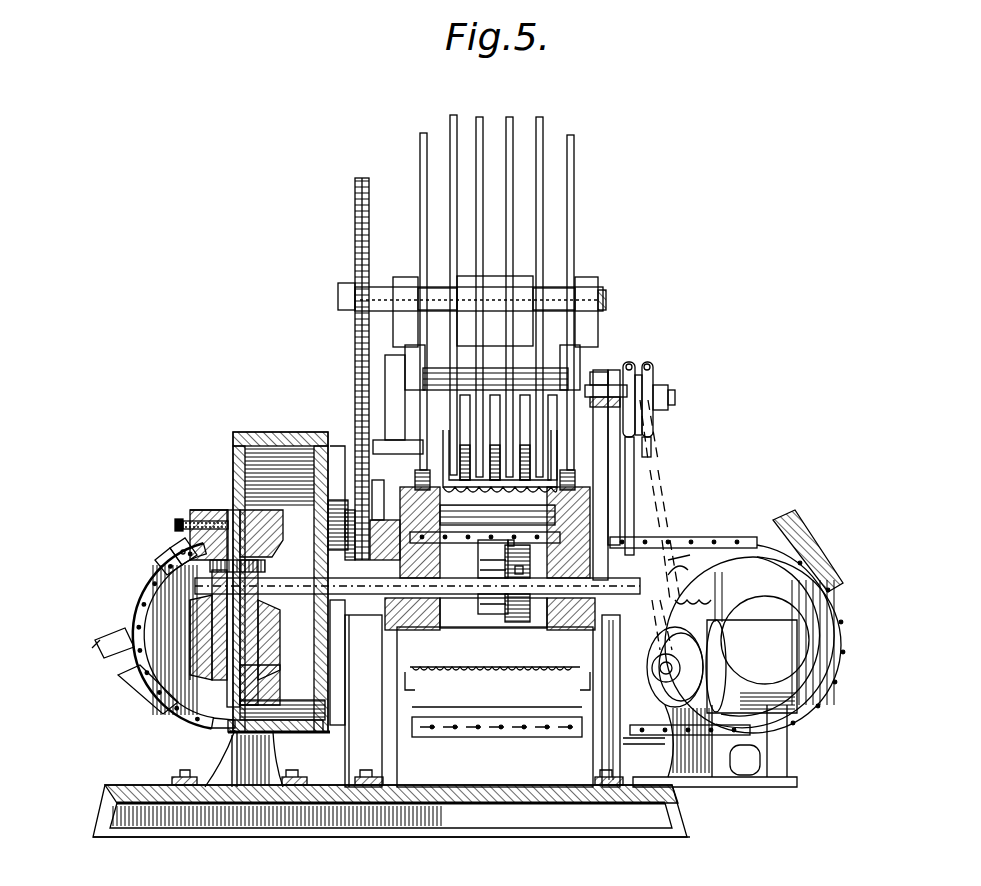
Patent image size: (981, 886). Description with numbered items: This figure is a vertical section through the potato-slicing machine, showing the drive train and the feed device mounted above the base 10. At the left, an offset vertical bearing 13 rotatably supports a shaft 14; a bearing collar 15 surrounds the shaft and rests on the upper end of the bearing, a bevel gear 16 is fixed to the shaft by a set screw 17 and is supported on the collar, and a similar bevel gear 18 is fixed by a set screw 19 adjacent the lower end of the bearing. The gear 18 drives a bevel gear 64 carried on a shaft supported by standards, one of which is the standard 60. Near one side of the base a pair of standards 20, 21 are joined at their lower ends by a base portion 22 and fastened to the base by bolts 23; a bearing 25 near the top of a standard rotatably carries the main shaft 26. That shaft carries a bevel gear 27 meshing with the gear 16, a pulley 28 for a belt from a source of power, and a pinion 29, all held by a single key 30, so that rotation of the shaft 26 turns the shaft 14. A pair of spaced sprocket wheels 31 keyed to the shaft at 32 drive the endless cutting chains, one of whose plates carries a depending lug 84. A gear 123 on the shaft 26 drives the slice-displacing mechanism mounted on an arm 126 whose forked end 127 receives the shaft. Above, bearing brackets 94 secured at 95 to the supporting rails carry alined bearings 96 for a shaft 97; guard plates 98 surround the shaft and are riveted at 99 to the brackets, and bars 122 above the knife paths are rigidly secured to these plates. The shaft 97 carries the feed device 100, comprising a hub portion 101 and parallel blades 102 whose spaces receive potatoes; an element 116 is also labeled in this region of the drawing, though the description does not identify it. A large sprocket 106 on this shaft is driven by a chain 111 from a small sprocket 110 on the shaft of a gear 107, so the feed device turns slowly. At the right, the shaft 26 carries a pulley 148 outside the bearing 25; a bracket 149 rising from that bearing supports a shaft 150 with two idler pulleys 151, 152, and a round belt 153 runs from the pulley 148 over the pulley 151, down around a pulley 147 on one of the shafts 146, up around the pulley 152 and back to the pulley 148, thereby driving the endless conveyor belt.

The base 10 is at (483, 805).
The bearing 13 is at (215, 583).
The shaft 14 is at (228, 510).
The bearing collar 15 is at (168, 552).
The bevel gear 16 is at (200, 510).
The set screw 17 is at (175, 524).
The bevel gear 18 is at (200, 726).
The set screw 19 is at (165, 702).
The standard 20 is at (360, 742).
The standard 21 is at (605, 752).
The base portion 22 is at (460, 787).
The bolts 23 is at (355, 773).
The bearing 25 is at (598, 648).
The shaft 26 is at (520, 600).
The bevel gear 27 is at (268, 615).
The pulley 28 is at (252, 432).
The pinion 29 is at (345, 615).
The key 30 is at (320, 580).
The sprocket wheels 31 is at (410, 688).
The key 32 is at (440, 600).
The standard 60 is at (210, 770).
The bevel gear 64 is at (150, 650).
The depending lug 84 is at (378, 520).
The bearing brackets 94 is at (437, 280).
The securing means 95 is at (380, 440).
The bearings 96 is at (395, 287).
The shaft 97 is at (391, 230).
The guard plate 98 is at (420, 194).
The rivets 99 is at (598, 368).
The feed device 100 is at (568, 120).
The hub portion 101 is at (494, 285).
The blades 102 is at (510, 117).
The sprocket 106 is at (355, 244).
The gear 107 is at (338, 445).
The sprocket 110 is at (348, 500).
The chain 111 is at (355, 352).
The plunger 116 is at (487, 395).
The bar 122 is at (526, 551).
The gear 123 is at (532, 573).
The arm 126 is at (518, 602).
The forked end 127 is at (478, 590).
The shafts 146 is at (640, 690).
The pulley 147 is at (660, 670).
The pulley 148 is at (665, 537).
The bracket 149 is at (645, 445).
The shaft 150 is at (625, 365).
The idler pulley 151 is at (655, 375).
The idler pulley 152 is at (658, 395).
The belt 153 is at (640, 465).